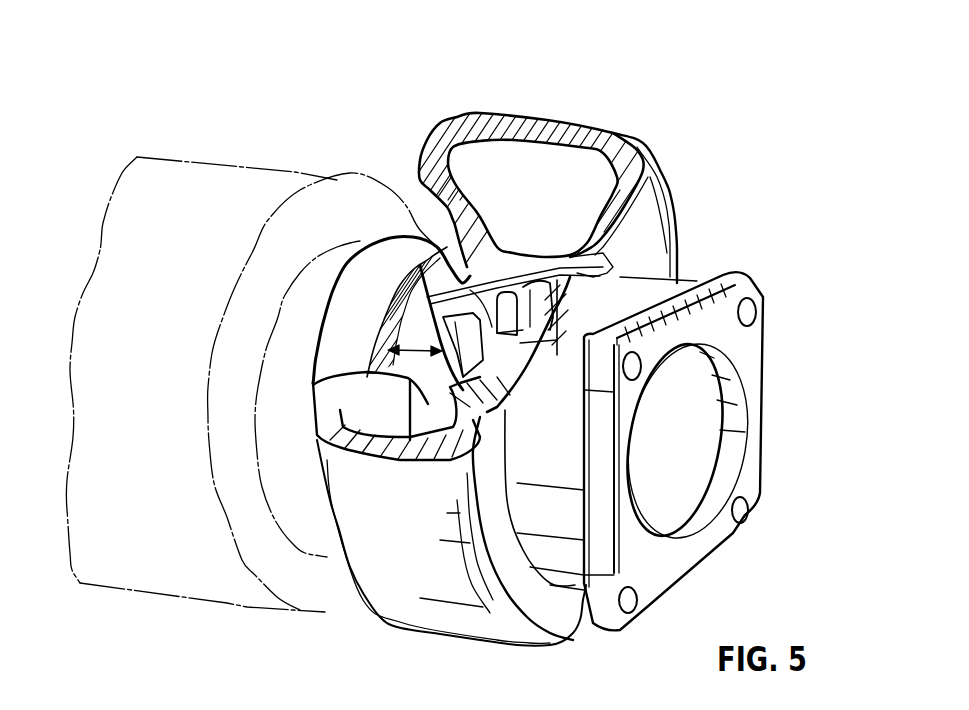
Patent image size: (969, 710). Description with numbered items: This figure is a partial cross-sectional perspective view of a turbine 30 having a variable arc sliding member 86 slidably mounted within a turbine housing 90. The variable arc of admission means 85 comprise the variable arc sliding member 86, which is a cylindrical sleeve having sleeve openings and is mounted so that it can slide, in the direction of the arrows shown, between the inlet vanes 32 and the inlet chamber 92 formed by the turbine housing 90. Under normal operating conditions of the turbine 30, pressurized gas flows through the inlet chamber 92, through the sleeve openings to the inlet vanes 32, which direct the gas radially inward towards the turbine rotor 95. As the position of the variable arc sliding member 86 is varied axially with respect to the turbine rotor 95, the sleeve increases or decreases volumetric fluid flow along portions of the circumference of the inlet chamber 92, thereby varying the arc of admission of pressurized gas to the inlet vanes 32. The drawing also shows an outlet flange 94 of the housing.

The turbine 30 is at (316, 121).
The variable arc of admission means 85 is at (543, 218).
The turbine housing 90 is at (620, 149).
The variable arc sliding member 86 is at (440, 242).
The inlet vanes 32 is at (465, 251).
The outlet flange 94 is at (670, 283).
The inlet chamber 92 is at (395, 378).
The turbine rotor 95 is at (510, 395).